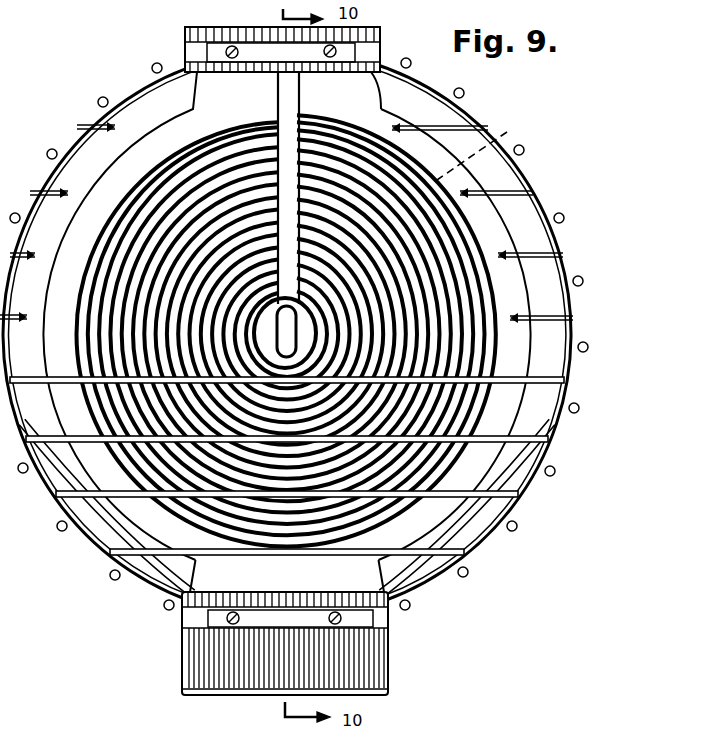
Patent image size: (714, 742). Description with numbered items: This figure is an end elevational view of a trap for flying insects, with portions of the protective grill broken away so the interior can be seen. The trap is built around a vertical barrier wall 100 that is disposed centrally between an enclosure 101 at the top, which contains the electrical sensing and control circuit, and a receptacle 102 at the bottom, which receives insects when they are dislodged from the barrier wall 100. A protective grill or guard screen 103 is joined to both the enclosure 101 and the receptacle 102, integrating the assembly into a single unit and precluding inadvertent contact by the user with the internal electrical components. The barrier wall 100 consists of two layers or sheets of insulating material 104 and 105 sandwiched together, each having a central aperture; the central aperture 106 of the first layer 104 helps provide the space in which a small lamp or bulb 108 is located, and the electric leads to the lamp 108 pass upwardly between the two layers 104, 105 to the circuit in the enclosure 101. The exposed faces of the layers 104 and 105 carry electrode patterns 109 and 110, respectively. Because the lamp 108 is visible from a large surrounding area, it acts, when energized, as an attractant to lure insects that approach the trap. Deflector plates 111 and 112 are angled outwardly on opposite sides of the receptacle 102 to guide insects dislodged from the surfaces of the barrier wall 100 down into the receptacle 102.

The barrier wall 100 is at (540, 345).
The enclosure 101 is at (376, 32).
The receptacle 102 is at (374, 660).
The protective grill or guard screen 103 is at (517, 185).
The layer of insulating material 104 is at (507, 405).
The layer of insulating material 105 is at (500, 247).
The central aperture 106 is at (308, 323).
The lamp or bulb 108 is at (283, 335).
The electrode pattern 109 is at (367, 157).
The electrode pattern 110 is at (485, 144).
The deflector plate 111 is at (505, 487).
The deflector plate 112 is at (108, 522).